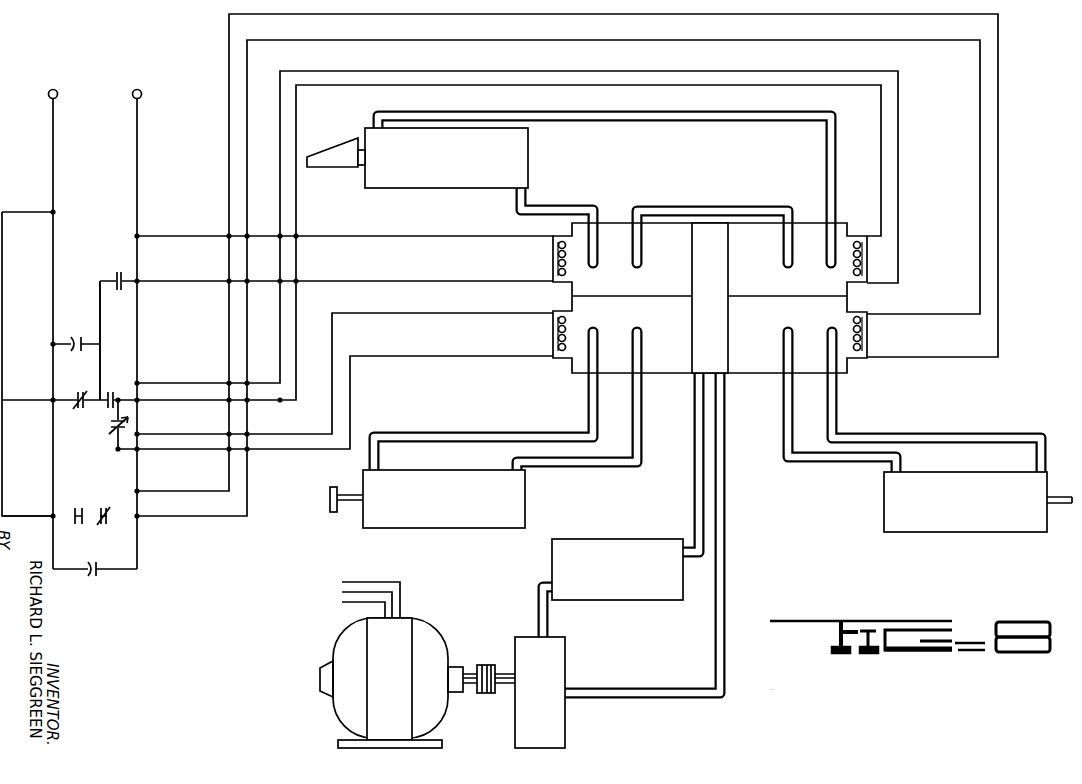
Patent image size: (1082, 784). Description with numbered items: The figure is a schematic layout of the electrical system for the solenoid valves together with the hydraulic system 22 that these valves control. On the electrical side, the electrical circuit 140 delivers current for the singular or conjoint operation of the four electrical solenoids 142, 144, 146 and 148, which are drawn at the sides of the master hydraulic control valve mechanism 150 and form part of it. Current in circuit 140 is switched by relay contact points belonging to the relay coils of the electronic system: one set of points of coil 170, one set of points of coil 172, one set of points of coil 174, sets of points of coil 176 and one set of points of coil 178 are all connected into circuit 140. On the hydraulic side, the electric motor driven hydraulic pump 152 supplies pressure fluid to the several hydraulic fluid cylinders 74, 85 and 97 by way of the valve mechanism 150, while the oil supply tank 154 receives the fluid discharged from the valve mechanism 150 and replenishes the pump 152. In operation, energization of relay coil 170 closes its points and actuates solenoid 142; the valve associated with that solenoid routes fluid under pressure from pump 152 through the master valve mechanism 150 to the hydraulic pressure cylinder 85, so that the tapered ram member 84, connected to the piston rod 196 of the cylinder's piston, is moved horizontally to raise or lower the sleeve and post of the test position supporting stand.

The hydraulic system 22 is at (530, 570).
The hydraulic fluid cylinder 74 is at (443, 510).
The ram member 84 is at (335, 159).
The hydraulic pressure cylinder 85 is at (512, 163).
The hydraulic fluid cylinder 97 is at (1012, 515).
The electrical circuit 140 is at (93, 296).
The electrical solenoid 142 is at (553, 259).
The electrical solenoid 144 is at (553, 333).
The electrical solenoid 146 is at (868, 264).
The electrical solenoid 148 is at (868, 350).
The master hydraulic control valve mechanism 150 is at (727, 331).
The electric motor driven hydraulic pump 152 is at (547, 672).
The oil supply tank 154 is at (598, 558).
The current relay coil 170 is at (119, 270).
The current relay coil 172 is at (114, 394).
The current relay coil 174 is at (128, 425).
The current relay coil 176 is at (78, 389).
The current relay coil 178 is at (105, 506).
The piston rod 196 is at (362, 164).